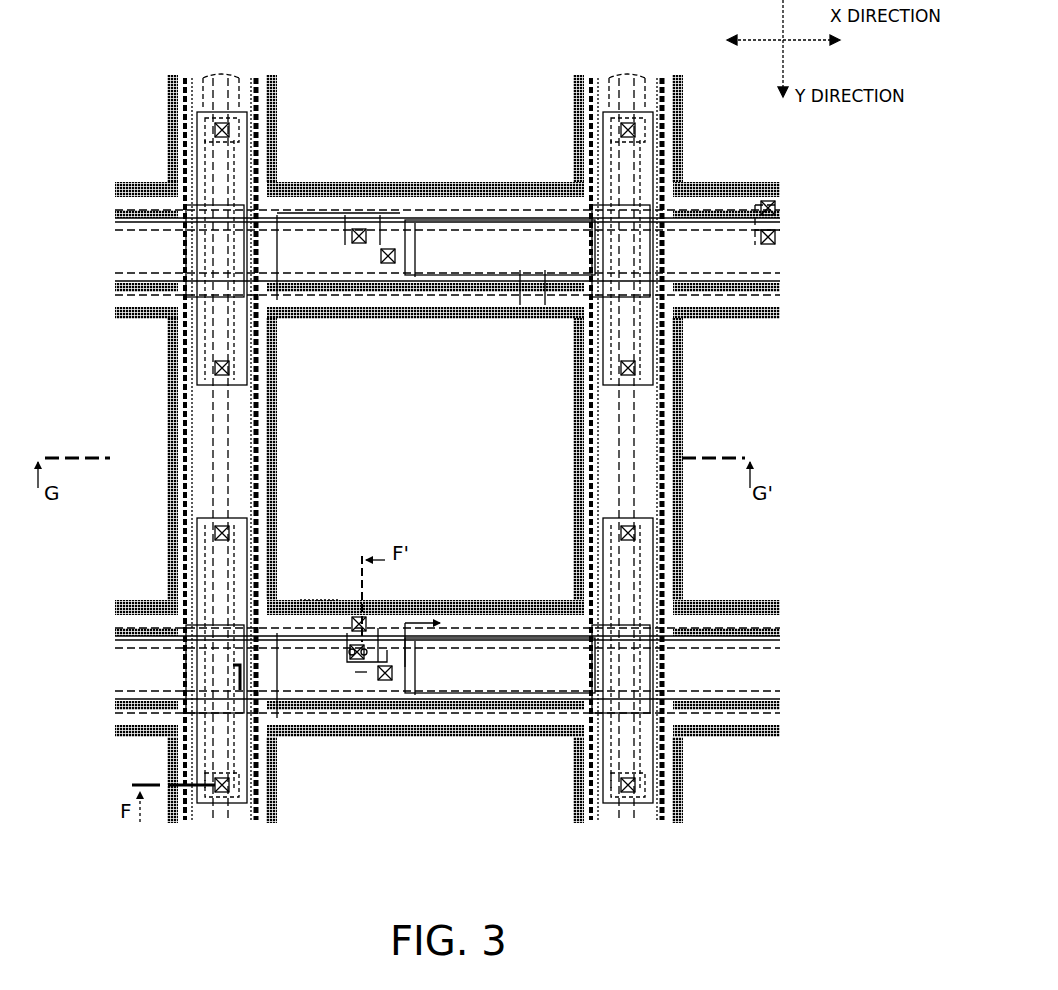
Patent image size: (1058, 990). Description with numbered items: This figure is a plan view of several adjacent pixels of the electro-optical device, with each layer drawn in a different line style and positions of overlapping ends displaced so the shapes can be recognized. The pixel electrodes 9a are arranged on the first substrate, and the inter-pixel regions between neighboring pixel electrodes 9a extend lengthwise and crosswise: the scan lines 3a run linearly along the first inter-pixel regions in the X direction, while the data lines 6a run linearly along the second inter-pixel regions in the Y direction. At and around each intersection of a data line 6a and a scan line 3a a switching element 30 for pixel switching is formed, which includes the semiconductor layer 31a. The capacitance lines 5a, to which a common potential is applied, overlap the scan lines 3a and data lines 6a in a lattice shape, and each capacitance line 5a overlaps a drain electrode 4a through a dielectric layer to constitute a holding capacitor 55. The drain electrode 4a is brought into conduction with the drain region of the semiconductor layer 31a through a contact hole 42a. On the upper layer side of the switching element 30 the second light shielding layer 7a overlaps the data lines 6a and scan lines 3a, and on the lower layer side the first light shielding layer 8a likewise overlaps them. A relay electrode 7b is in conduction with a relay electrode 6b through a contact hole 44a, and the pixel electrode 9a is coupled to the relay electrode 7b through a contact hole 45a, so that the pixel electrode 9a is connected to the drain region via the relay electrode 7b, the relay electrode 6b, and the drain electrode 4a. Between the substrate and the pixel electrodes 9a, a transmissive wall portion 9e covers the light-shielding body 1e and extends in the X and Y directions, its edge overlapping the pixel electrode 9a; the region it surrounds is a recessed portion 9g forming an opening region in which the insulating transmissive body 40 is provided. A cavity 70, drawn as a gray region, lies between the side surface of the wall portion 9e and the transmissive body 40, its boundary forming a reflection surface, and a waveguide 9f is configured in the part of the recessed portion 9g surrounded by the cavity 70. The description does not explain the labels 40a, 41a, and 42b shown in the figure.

The light-shielding body 1e is at (412, 436).
The data line 6a is at (425, 436).
The scan line 3a is at (110, 215).
The second light shielding layer 7a is at (300, 352).
The pixel electrode 9a is at (450, 300).
The wall portion 9e is at (300, 422).
The pixel electrode connection portion 40a is at (347, 449).
The recessed portion 9g is at (290, 468).
The waveguide 9f is at (427, 450).
The transmissive body 40 is at (455, 501).
The cavity 70 is at (575, 460).
The relay electrode 41a is at (215, 532).
The first light shielding layer 8a is at (300, 547).
The relay electrode 7b is at (320, 603).
The contact hole 42b is at (346, 630).
The contact hole 45a is at (402, 614).
The switching element 30 is at (183, 660).
The semiconductor layer 31a is at (165, 733).
The relay electrode 6b is at (322, 702).
The contact hole 44a is at (385, 682).
The drain electrode 4a is at (396, 702).
The capacitance line 5a is at (511, 751).
The holding capacitor 55 is at (467, 764).
The contact hole 42a is at (215, 792).